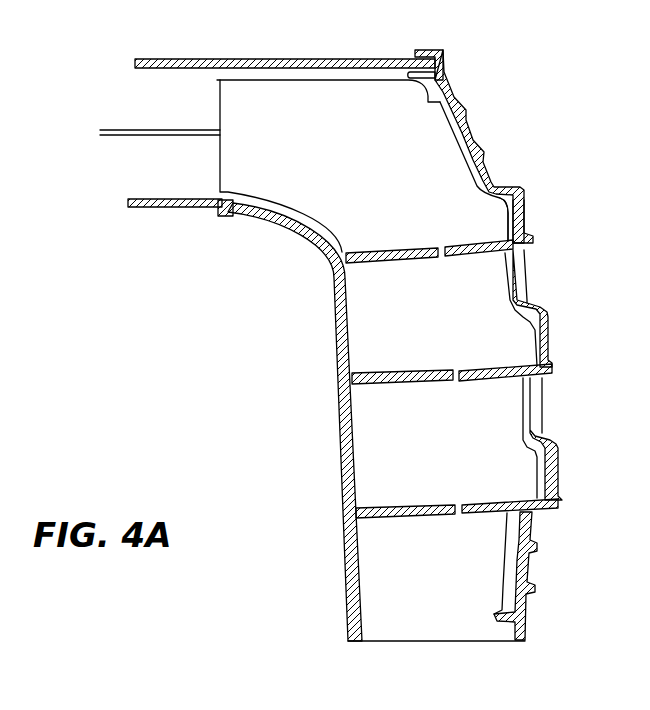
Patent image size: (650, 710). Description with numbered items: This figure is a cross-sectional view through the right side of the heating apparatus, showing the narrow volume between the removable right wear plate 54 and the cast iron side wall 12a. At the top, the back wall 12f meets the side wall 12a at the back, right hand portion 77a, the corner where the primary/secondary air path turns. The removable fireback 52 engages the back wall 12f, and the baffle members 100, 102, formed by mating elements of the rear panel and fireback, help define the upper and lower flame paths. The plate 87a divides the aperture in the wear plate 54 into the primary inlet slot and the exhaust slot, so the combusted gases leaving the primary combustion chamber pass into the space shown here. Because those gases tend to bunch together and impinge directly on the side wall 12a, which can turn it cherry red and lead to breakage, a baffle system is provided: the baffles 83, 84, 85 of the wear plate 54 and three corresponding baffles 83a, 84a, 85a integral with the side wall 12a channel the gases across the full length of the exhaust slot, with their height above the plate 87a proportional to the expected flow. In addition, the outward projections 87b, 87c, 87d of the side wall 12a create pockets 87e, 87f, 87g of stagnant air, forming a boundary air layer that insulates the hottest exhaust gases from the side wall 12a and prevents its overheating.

The back wall 12f is at (287, 59).
The back, right hand portion 77a is at (383, 100).
The side wall 12a is at (463, 132).
The plate 87a is at (368, 157).
The baffle member 102 is at (172, 107).
The baffle member 100 is at (172, 176).
The fireback 52 is at (172, 207).
The right wear plate 54 is at (342, 462).
The pocket 87e is at (507, 225).
The outward projection 87b is at (525, 212).
The baffle 85 is at (369, 264).
The baffle 85a is at (481, 257).
The pocket 87f is at (534, 348).
The outward projection 87c is at (549, 334).
The baffle 84 is at (387, 383).
The baffle 84a is at (508, 380).
The pocket 87g is at (537, 483).
The outward projection 87d is at (558, 473).
The baffle 83 is at (382, 519).
The baffle 83a is at (498, 516).